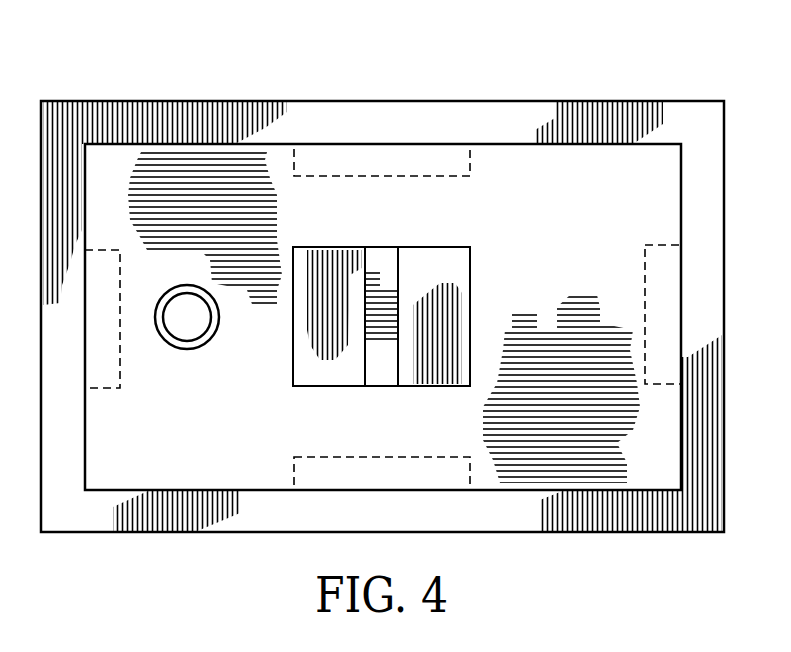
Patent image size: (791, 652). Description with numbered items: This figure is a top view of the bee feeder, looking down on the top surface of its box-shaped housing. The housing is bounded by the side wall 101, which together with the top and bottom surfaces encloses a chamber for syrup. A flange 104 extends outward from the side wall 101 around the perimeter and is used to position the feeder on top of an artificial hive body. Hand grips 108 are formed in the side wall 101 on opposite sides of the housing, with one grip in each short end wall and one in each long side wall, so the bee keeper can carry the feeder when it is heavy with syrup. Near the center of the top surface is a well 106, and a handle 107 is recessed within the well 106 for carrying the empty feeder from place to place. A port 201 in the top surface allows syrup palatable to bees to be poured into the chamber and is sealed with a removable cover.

The flange 104 is at (332, 120).
The side wall 101 is at (431, 142).
The hand grips 108 is at (665, 270).
The well 106 is at (452, 264).
The handle 107 is at (380, 260).
The port 201 is at (190, 350).